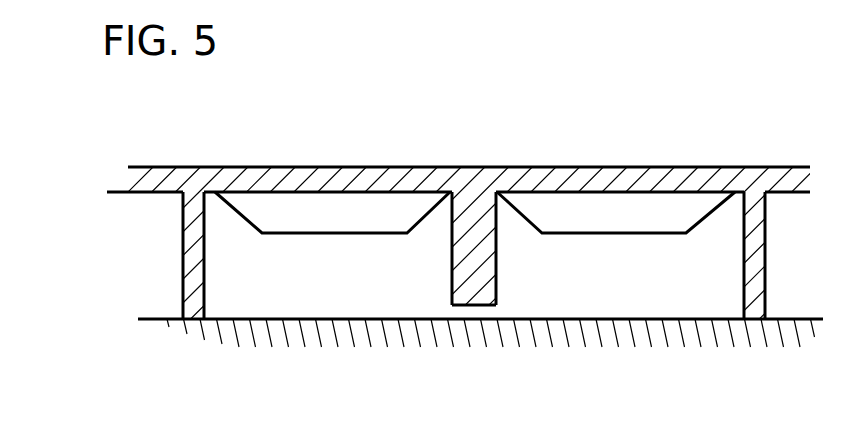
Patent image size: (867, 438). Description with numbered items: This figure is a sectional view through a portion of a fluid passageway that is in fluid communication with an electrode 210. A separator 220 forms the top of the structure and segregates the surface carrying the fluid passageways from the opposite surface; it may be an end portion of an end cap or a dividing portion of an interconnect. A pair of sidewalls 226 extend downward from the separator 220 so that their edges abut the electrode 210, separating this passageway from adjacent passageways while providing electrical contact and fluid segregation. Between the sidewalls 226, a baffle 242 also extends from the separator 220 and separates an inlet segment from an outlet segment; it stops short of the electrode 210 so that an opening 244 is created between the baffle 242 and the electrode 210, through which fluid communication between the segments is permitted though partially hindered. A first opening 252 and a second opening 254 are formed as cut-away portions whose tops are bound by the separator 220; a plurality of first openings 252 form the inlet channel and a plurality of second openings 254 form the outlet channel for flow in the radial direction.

The electrode 210 is at (160, 318).
The separator 220 is at (718, 183).
The sidewall 226 is at (183, 253).
The baffle 242 is at (472, 297).
The opening 244 is at (482, 312).
The first opening 252 is at (330, 212).
The second opening 254 is at (610, 217).